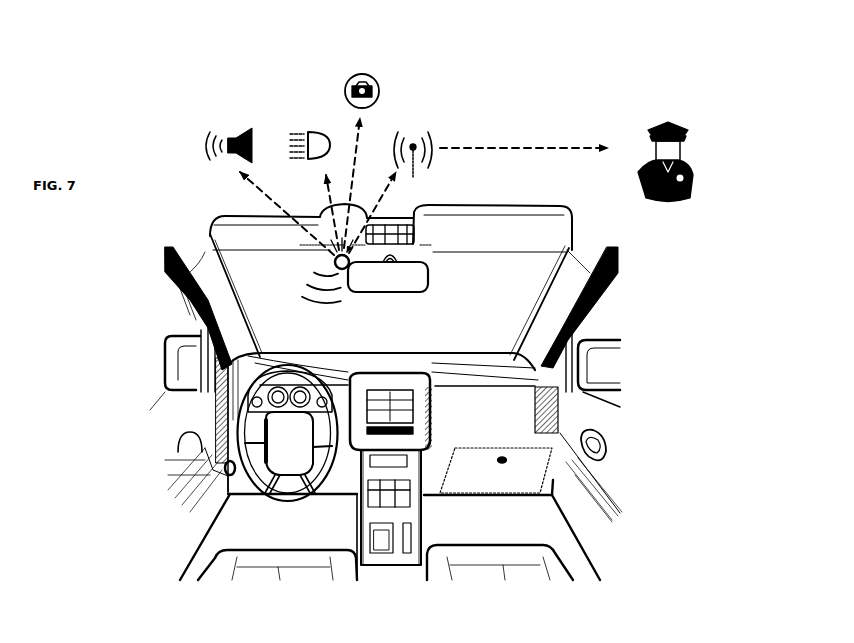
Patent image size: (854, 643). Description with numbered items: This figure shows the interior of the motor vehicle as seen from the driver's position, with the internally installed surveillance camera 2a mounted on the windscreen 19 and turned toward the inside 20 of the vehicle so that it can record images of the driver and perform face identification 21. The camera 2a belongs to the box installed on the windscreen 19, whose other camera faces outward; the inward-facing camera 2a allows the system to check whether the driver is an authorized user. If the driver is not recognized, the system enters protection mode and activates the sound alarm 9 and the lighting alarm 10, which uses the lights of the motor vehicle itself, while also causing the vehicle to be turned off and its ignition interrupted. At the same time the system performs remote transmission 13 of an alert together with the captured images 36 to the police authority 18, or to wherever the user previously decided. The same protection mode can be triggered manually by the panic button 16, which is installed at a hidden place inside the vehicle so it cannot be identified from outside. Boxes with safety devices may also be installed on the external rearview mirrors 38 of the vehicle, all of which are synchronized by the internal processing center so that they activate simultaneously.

The sound alarm 9 is at (218, 123).
The lighting alarm 10 is at (306, 120).
The images 36 is at (383, 85).
The remote transmission 13 is at (442, 133).
The police authority 18 is at (692, 133).
The surveillance camera 2a is at (330, 257).
The face identification 21 is at (296, 297).
The windscreen 19 is at (516, 281).
The external rearview mirror 38 is at (190, 364).
The panic button 16 is at (223, 463).
The inside 20 is at (618, 460).